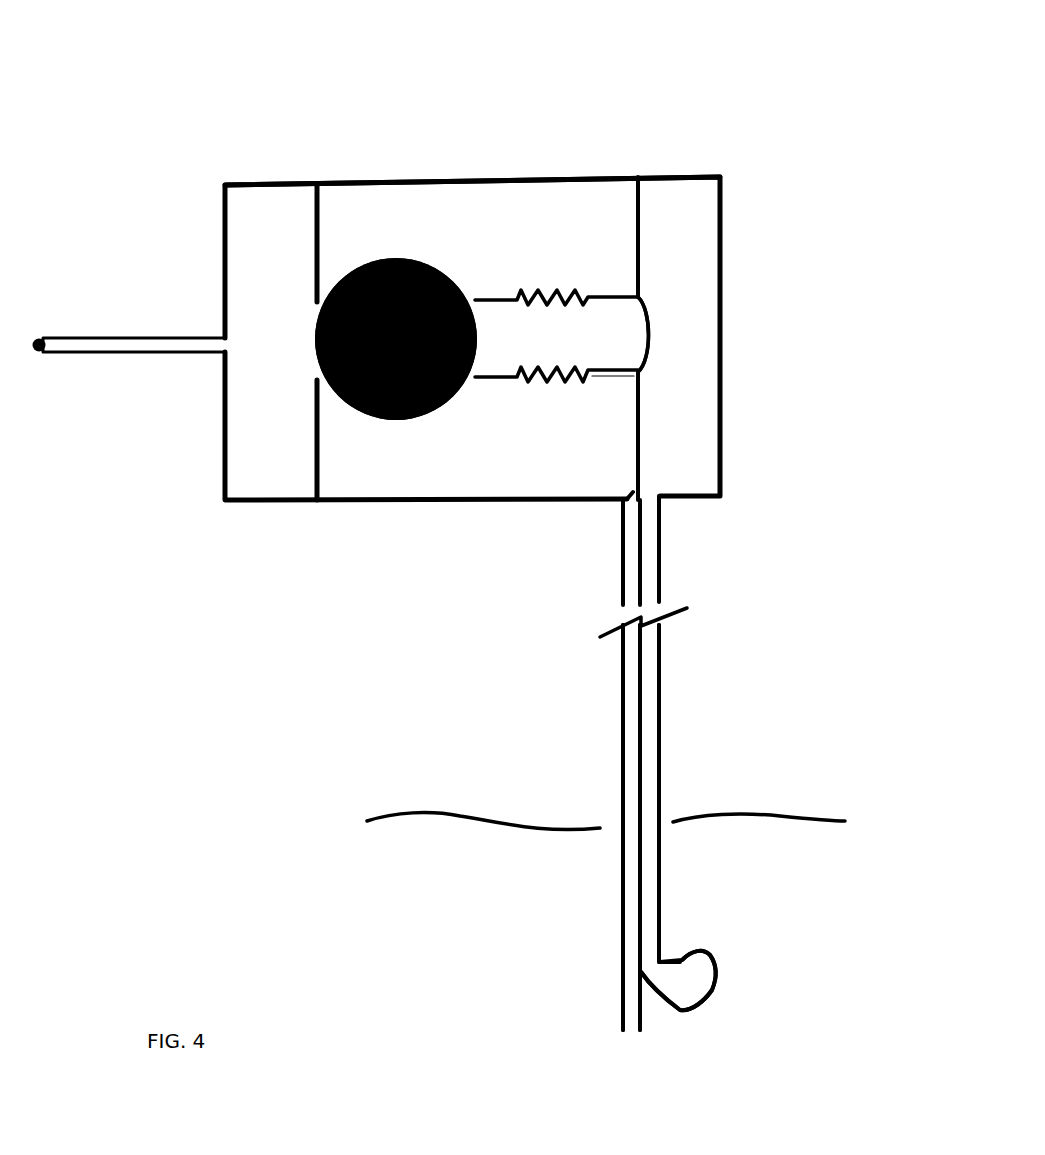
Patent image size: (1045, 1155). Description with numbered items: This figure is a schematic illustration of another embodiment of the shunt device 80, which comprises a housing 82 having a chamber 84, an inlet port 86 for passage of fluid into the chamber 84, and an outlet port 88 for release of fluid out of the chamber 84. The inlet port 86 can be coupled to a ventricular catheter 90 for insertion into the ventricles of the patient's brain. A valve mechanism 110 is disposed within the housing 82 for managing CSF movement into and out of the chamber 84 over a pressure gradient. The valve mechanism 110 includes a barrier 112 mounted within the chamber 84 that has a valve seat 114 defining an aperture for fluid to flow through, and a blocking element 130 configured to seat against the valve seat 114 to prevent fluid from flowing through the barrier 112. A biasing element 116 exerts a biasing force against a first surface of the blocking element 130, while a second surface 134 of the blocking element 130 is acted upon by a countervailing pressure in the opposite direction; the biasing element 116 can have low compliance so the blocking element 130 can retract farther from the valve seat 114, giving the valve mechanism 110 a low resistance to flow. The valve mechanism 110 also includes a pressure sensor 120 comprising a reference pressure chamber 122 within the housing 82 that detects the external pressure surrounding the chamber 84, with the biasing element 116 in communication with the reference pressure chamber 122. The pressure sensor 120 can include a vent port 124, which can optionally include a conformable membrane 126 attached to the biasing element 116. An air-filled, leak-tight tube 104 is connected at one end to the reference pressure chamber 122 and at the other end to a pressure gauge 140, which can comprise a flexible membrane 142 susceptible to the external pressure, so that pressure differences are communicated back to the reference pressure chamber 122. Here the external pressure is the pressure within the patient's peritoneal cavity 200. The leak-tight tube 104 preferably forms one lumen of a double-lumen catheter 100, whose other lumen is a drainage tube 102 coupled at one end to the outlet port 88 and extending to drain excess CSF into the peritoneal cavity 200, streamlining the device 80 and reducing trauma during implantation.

The shunt device 80 is at (565, 110).
The housing 82 is at (367, 182).
The chamber 84 is at (497, 234).
The inlet port 86 is at (223, 345).
The outlet port 88 is at (630, 499).
The ventricular catheter 90 is at (122, 348).
The double-lumen catheter 100 is at (682, 652).
The drainage tube 102 is at (632, 673).
The leak-tight tube 104 is at (648, 800).
The valve mechanism 110 is at (421, 240).
The barrier 112 is at (313, 232).
The valve seat 114 is at (307, 375).
The biasing element 116 is at (567, 290).
The pressure sensor 120 is at (698, 305).
The reference pressure chamber 122 is at (697, 237).
The vent port 124 is at (632, 323).
The conformable membrane 126 is at (648, 352).
The blocking element 130 is at (380, 423).
The second surface 134 is at (315, 345).
The pressure gauge 140 is at (698, 987).
The flexible membrane 142 is at (718, 963).
The peritoneal cavity 200 is at (487, 904).